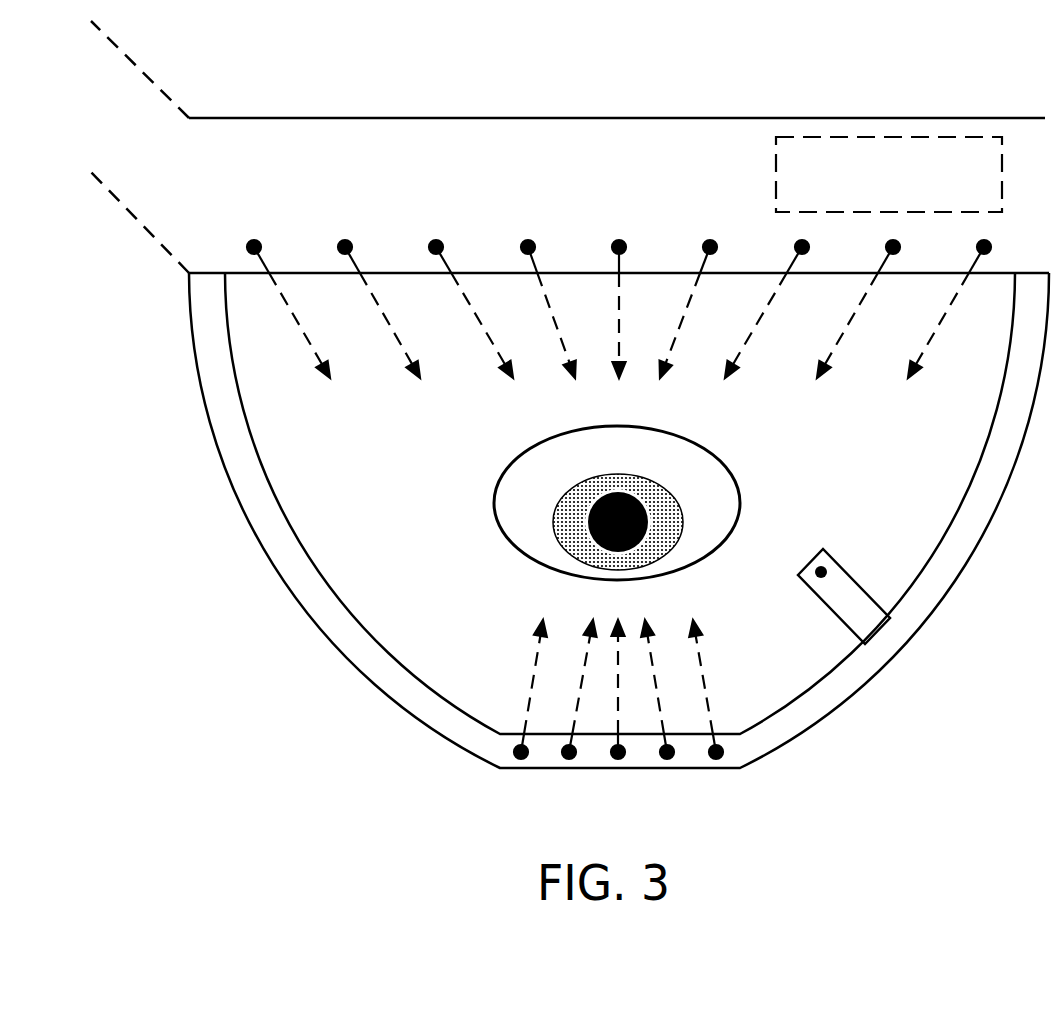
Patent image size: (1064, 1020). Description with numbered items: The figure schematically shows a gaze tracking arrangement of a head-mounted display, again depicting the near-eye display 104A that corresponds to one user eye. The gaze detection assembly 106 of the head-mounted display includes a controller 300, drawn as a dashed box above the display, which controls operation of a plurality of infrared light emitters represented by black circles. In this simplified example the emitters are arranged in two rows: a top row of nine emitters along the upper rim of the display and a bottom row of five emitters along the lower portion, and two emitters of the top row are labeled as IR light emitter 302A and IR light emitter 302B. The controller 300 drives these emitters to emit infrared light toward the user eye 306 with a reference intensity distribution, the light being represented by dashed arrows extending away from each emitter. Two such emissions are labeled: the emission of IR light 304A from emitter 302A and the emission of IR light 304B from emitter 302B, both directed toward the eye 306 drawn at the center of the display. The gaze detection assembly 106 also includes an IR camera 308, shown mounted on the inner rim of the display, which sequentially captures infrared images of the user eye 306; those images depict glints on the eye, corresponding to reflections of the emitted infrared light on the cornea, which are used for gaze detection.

The gaze detection assembly 106 is at (981, 84).
The controller 300 is at (1002, 184).
The near-eye display 104A is at (326, 645).
The IR light emitter 302A is at (619, 240).
The IR light emitter 302B is at (254, 240).
The emission of IR light 304A is at (618, 319).
The emission of IR light 304B is at (318, 360).
The user eye 306 is at (562, 432).
The IR camera 308 is at (851, 577).